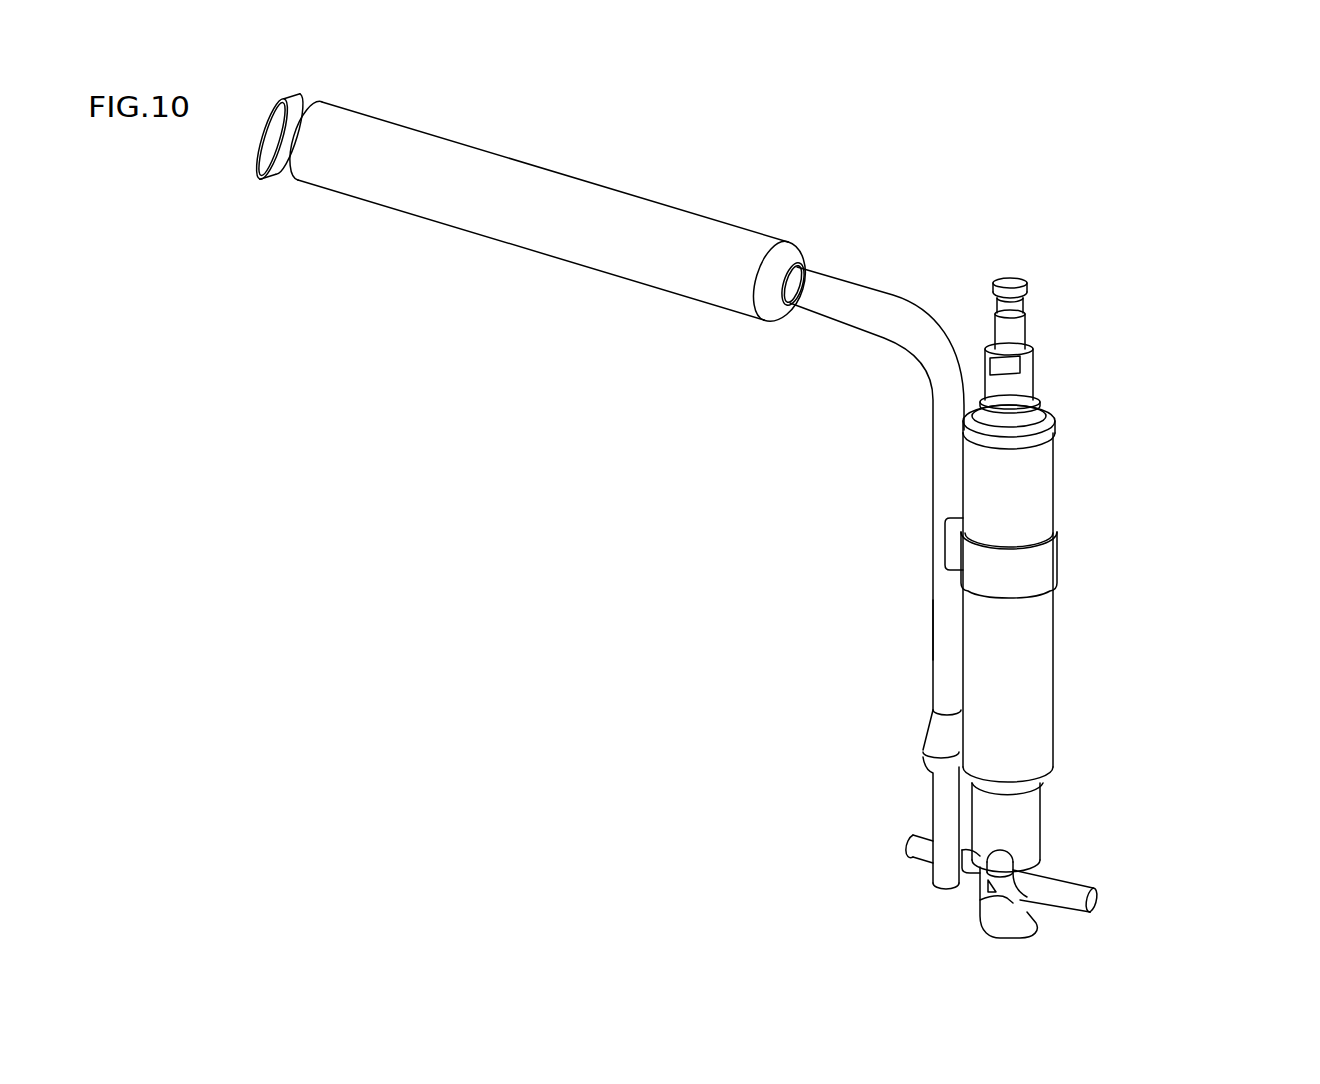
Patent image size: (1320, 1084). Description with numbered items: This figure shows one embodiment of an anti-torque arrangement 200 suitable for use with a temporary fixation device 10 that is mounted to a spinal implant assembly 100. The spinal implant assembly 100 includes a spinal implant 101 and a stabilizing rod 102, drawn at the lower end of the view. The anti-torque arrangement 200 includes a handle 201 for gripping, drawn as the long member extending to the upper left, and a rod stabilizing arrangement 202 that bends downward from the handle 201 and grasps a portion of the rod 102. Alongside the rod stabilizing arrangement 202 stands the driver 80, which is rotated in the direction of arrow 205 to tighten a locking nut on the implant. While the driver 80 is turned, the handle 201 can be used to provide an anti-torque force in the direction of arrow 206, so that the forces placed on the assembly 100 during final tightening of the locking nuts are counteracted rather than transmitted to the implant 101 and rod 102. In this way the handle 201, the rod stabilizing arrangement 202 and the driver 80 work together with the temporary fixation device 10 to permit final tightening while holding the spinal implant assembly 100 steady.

The temporary fixation device 10 is at (758, 521).
The driver 80 is at (1057, 501).
The spinal implant assembly 100 is at (1063, 889).
The spinal implant 101 is at (983, 897).
The stabilizing rod 102 is at (1105, 890).
The anti-torque arrangement 200 is at (607, 497).
The handle 201 is at (440, 213).
The rod stabilizing arrangement 202 is at (933, 866).
The arrow 205 is at (1063, 618).
The arrow 206 is at (920, 626).